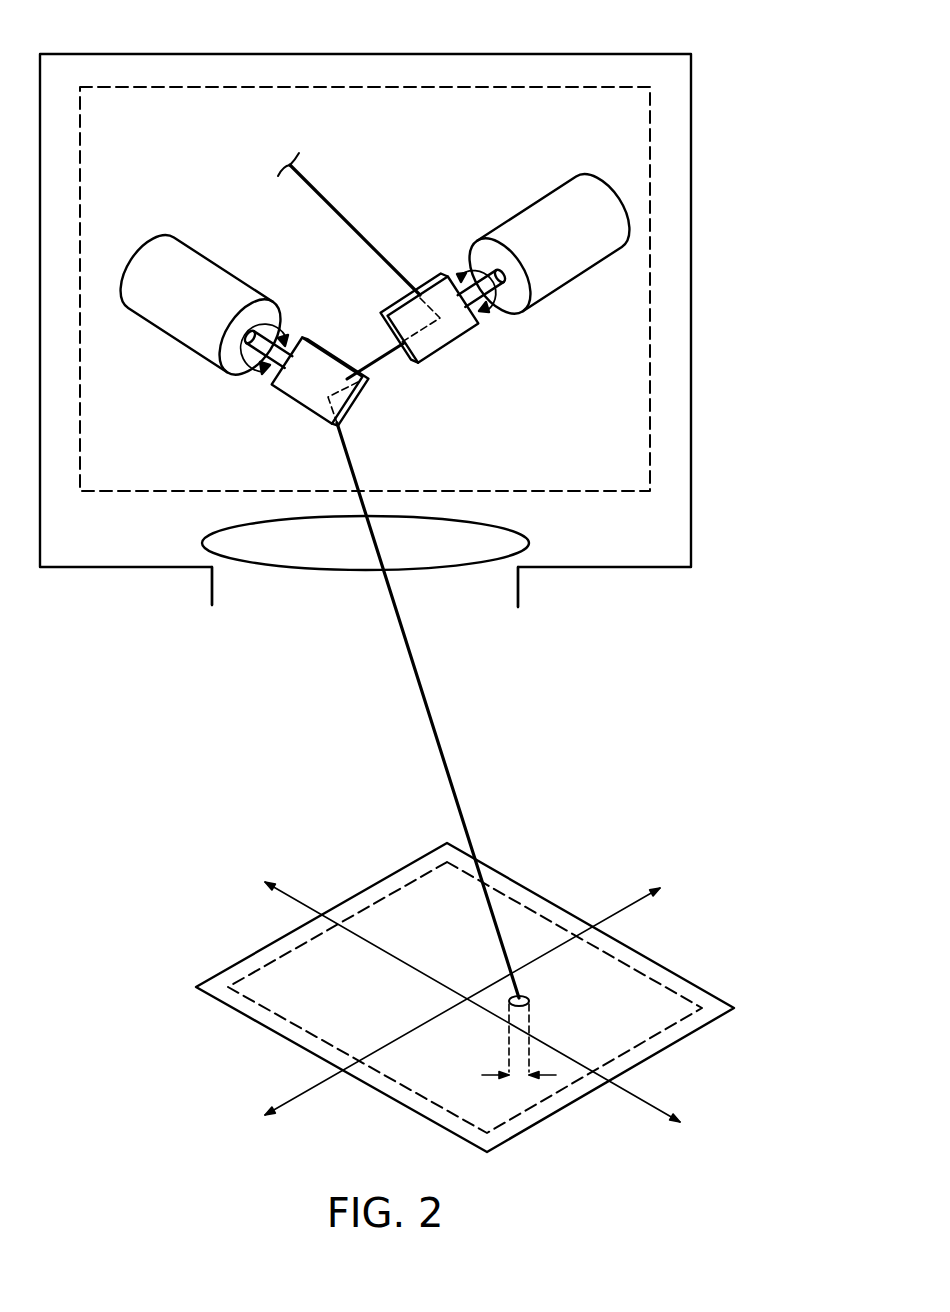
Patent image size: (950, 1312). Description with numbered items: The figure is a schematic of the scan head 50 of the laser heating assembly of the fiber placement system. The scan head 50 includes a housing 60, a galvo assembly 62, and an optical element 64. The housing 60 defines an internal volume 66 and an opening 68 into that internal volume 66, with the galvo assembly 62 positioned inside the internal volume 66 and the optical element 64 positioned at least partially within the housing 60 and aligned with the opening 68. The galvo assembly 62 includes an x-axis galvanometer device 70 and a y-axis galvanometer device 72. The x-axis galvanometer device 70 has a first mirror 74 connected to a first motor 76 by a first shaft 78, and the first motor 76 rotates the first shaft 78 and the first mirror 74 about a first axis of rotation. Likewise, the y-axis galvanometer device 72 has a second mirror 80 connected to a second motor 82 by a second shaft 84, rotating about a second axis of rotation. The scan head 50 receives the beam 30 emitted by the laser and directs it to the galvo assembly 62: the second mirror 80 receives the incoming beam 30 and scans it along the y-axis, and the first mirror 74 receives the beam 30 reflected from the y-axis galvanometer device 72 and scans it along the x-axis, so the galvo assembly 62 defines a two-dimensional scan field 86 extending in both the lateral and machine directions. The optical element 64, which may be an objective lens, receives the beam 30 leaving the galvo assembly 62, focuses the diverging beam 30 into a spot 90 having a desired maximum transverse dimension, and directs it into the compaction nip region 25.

The compaction nip region 25 is at (693, 1035).
The beam 30 is at (329, 204).
The scan head 50 is at (423, 352).
The housing 60 is at (691, 273).
The galvo assembly 62 is at (651, 193).
The optical element 64 is at (462, 566).
The internal volume 66 is at (375, 234).
The opening 68 is at (363, 632).
The x-axis galvanometer device 70 is at (238, 330).
The y-axis galvanometer device 72 is at (511, 301).
The first mirror 74 is at (293, 404).
The first motor 76 is at (207, 256).
The first shaft 78 is at (268, 324).
The second mirror 80 is at (438, 352).
The second motor 82 is at (572, 277).
The second shaft 84 is at (462, 268).
The scan field 86 is at (664, 984).
The spot 90 is at (531, 997).